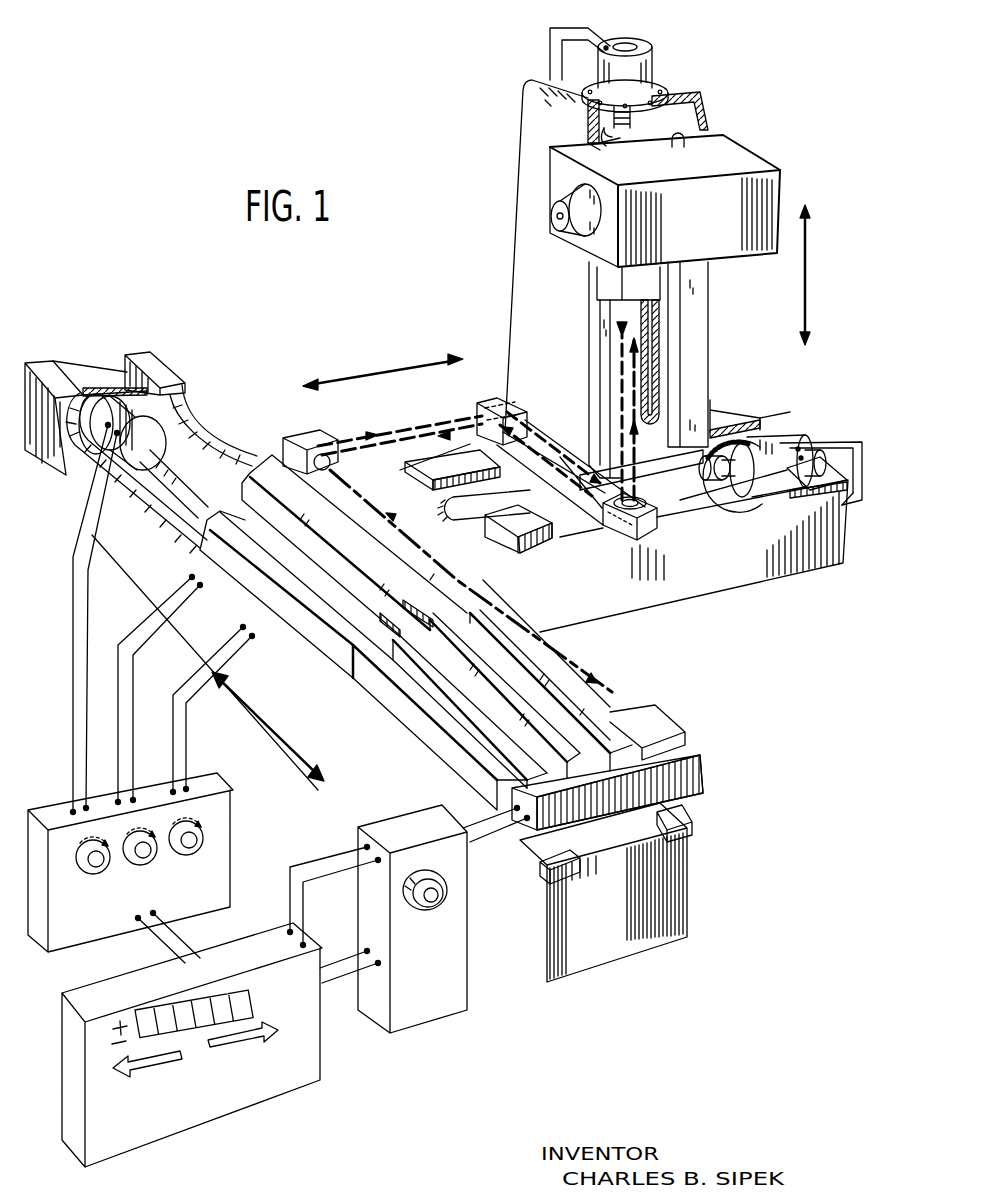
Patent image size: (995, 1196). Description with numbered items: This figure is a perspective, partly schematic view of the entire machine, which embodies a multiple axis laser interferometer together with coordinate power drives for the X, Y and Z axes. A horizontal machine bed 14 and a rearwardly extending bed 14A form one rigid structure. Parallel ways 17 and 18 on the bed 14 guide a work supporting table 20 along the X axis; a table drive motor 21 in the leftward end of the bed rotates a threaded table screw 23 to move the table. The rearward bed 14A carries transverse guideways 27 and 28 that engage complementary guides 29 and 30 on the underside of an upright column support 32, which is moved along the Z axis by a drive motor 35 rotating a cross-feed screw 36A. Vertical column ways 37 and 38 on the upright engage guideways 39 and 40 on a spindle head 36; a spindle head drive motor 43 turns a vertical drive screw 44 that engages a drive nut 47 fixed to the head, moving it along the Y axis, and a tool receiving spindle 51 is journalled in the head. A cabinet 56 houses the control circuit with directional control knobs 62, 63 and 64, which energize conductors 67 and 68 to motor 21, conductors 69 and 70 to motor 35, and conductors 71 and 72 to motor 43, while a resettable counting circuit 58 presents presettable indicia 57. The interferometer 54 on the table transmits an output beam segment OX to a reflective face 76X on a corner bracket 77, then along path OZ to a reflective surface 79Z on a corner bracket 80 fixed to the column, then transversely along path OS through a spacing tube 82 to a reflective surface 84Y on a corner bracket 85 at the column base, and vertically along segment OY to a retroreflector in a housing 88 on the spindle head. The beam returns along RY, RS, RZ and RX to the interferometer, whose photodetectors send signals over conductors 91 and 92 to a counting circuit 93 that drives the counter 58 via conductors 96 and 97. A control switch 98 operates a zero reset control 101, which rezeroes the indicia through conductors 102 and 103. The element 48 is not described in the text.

The machine bed 14 is at (645, 945).
The rearwardly extending machine bed 14A is at (712, 594).
The way 17 is at (43, 364).
The way 18 is at (151, 354).
The worktable 20 is at (445, 718).
The table drive motor 21 is at (150, 421).
The table screw 23 is at (180, 482).
The guideway 27 is at (428, 472).
The guideway 28 is at (510, 534).
The guide 29 is at (483, 466).
The guide 30 is at (556, 522).
The column support 32 is at (511, 296).
The drive motor 35 is at (780, 440).
The spindle head 36 is at (740, 160).
The cross-feed screw 36A is at (706, 486).
The column way 37 is at (597, 335).
The column way 38 is at (698, 306).
The guideway 39 is at (583, 142).
The guideway 40 is at (681, 148).
The spindle head drive motor 43 is at (634, 45).
The vertical drive screw 44 is at (632, 116).
The drive nut 47 is at (607, 148).
The saddle 48 is at (668, 432).
The tool receiving spindle 51 is at (555, 206).
The laser interferometer 54 is at (630, 805).
The cabinet 56 is at (100, 935).
The indicia 57 is at (203, 1005).
The counting circuit 58 is at (118, 1145).
The table control knob 62 is at (96, 876).
The cross-feed control knob 63 is at (145, 866).
The spindle head control knob 64 is at (193, 846).
The output conductor 67 is at (73, 623).
The output conductor 68 is at (88, 615).
The conductor 69 is at (842, 510).
The conductor 70 is at (830, 446).
The output conductor 71 is at (556, 21).
The output conductor 72 is at (576, 42).
The reflective face 76X is at (310, 437).
The corner bracket 77 is at (292, 436).
The reflective surface 79Z is at (490, 408).
The corner bracket 80 is at (500, 403).
The spacing tube 82 is at (560, 462).
The reflective surface 84Y is at (655, 530).
The corner bracket 85 is at (625, 540).
The housing 88 is at (607, 283).
The conductor 91 is at (460, 815).
The conductor 92 is at (474, 838).
The counting circuit 93 is at (372, 827).
The output conductor 96 is at (325, 860).
The output conductor 97 is at (320, 878).
The control switch 98 is at (440, 908).
The zero reset control 101 is at (413, 1018).
The conductor 102 is at (337, 965).
The conductor 103 is at (348, 985).
The output beam segment OX is at (600, 680).
The output beam path segment OY is at (648, 400).
The output beam path OZ is at (358, 437).
The output beam path OS is at (532, 440).
The return beam path RX is at (480, 605).
The return beam path RY is at (617, 380).
The return beam path RZ is at (404, 434).
The return beam path RS is at (520, 462).
The X axis X is at (264, 724).
The Y axis Y is at (808, 290).
The Z axis Z is at (355, 378).